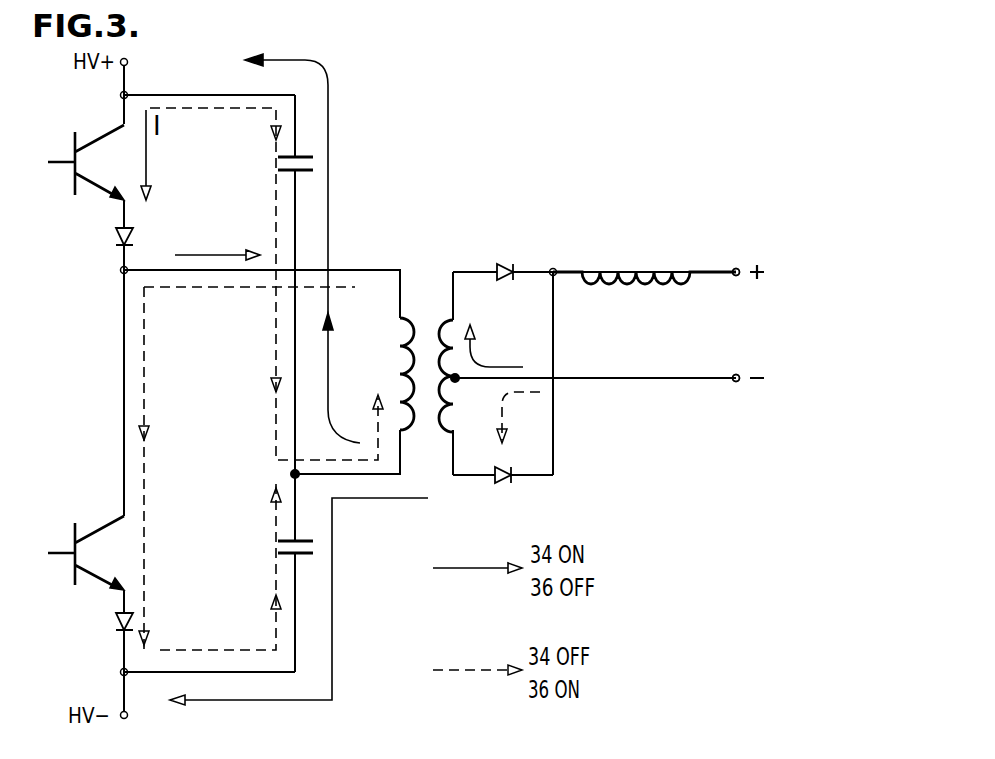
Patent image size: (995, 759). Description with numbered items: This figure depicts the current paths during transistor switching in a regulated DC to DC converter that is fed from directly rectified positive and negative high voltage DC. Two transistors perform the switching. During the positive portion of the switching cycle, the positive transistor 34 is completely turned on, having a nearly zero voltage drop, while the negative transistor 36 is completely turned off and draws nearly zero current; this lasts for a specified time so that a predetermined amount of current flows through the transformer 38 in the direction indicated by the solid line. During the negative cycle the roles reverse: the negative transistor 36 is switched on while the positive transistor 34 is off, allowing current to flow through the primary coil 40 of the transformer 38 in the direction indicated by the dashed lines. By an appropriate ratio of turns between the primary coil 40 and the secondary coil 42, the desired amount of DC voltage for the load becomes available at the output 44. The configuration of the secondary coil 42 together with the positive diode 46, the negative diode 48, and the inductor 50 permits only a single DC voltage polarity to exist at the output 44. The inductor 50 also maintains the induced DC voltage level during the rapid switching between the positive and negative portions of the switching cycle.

The positive transistor 34 is at (72, 153).
The negative transistor 36 is at (70, 566).
The transformer 38 is at (428, 330).
The primary coil 40 is at (404, 376).
The secondary coil 42 is at (448, 408).
The output 44 is at (738, 285).
The positive diode 46 is at (505, 263).
The negative diode 48 is at (504, 480).
The inductor 50 is at (641, 262).